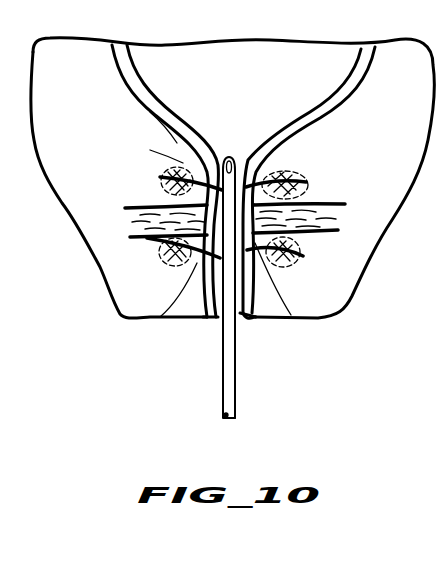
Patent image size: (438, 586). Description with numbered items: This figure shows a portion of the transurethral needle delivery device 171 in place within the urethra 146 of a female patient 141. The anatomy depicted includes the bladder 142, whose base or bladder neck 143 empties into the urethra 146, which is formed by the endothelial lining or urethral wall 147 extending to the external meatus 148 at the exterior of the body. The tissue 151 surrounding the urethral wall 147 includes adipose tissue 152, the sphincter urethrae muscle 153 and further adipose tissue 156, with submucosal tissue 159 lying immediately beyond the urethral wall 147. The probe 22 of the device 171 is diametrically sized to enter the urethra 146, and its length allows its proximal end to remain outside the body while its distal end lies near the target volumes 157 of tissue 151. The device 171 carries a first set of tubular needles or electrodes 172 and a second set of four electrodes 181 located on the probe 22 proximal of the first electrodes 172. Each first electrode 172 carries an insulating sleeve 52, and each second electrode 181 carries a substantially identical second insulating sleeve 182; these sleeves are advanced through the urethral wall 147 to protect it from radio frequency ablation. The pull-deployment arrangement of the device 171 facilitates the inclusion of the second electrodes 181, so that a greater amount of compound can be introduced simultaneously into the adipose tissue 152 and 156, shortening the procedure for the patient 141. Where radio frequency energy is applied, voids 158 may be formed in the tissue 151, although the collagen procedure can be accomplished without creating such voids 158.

The female patient 141 is at (412, 90).
The bladder 142 is at (141, 76).
The bladder neck 143 is at (214, 147).
The urethra 146 is at (246, 180).
The probe 22 is at (221, 390).
The transurethral needle delivery device 171 is at (236, 358).
The adipose tissue 152 is at (152, 114).
The insulating sleeve 52 is at (152, 151).
The first electrodes 172 is at (158, 174).
The voids 158 is at (301, 177).
The target volumes 157 is at (308, 183).
The tissue 151 is at (116, 227).
The sphincter urethrae muscle 153 is at (148, 239).
The urethral wall 147 is at (303, 237).
The second electrodes 181 is at (171, 272).
The adipose tissue 156 is at (157, 315).
The submucosal tissue 159 is at (203, 320).
The external meatus 148 is at (244, 314).
The second insulating sleeve 182 is at (291, 315).